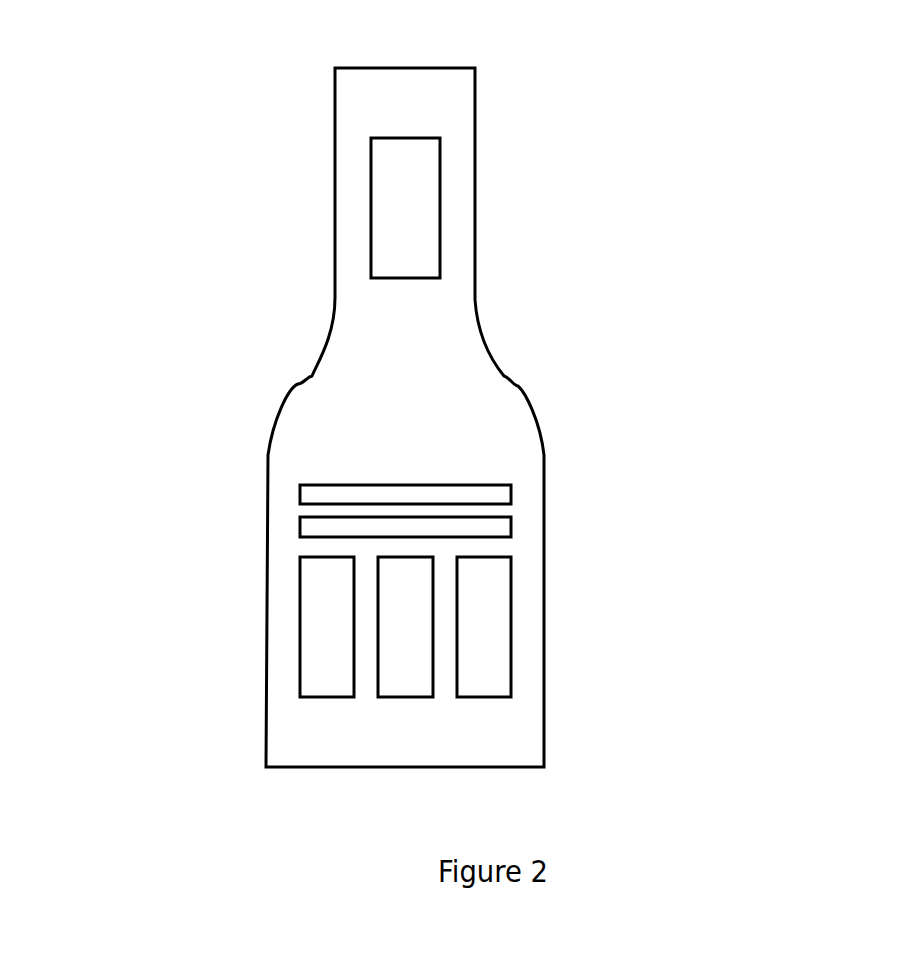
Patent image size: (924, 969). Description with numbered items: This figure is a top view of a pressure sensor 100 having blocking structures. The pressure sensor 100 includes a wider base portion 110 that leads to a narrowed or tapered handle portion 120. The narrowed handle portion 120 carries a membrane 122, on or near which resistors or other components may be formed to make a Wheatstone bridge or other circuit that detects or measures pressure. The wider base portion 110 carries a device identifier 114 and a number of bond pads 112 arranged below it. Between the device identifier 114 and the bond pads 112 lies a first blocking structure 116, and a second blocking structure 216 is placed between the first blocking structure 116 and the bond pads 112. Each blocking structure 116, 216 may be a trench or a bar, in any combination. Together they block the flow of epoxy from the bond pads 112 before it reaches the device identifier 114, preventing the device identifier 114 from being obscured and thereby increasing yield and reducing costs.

The pressure sensor 100 is at (806, 163).
The wider base portion 110 is at (266, 608).
The bond pads 112 is at (512, 637).
The device identifier 114 is at (458, 453).
The first blocking structure 116 is at (500, 485).
The second blocking structure 216 is at (513, 523).
The narrowed handle portion 120 is at (335, 165).
The membrane 122 is at (423, 173).